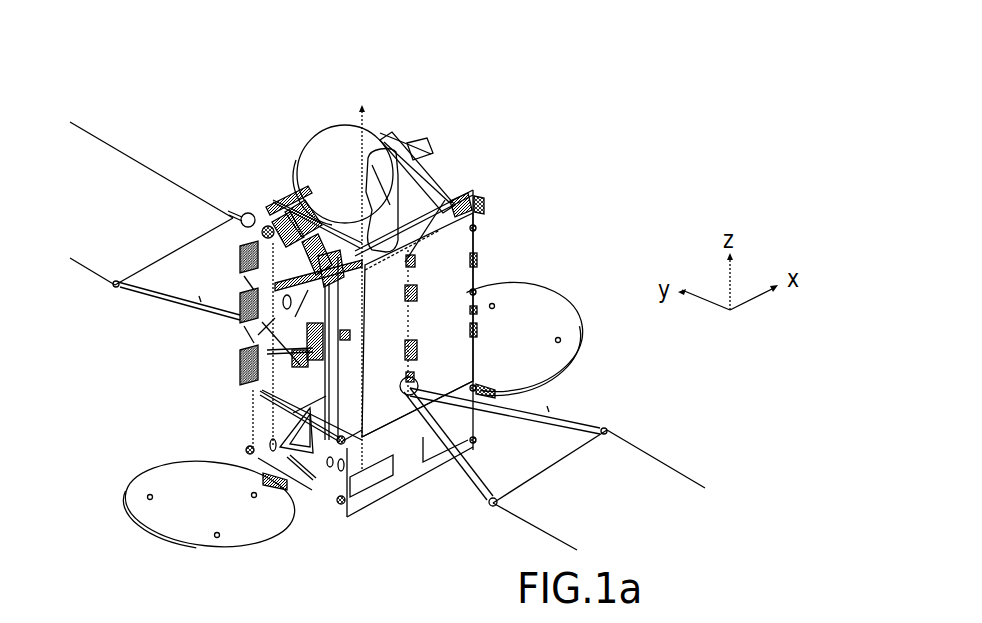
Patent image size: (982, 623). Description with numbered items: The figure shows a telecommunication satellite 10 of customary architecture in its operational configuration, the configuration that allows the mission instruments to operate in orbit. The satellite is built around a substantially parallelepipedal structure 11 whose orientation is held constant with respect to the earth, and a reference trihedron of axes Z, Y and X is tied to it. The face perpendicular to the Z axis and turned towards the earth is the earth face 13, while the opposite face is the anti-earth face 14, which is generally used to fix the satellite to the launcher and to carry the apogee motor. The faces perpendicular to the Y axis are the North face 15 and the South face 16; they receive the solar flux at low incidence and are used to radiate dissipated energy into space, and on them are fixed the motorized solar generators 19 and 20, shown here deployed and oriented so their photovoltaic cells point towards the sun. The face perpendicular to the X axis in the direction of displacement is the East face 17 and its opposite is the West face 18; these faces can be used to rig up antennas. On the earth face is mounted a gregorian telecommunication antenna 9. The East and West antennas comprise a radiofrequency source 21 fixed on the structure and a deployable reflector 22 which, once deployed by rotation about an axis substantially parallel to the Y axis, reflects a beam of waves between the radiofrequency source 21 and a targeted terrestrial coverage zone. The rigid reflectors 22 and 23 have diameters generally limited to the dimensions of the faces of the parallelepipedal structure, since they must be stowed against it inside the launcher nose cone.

The gregorian telecommunication antenna 9 is at (337, 145).
The satellite 10 is at (517, 160).
The substantially parallelepipedal structure 11 is at (477, 247).
The earth face 13 is at (402, 218).
The anti-earth face 14 is at (383, 492).
The North face 15 is at (453, 295).
The South face 16 is at (242, 317).
The East face 17 is at (473, 220).
The West face 18 is at (322, 487).
The solar generator 19 is at (627, 478).
The solar generator 20 is at (95, 190).
The radiofrequency source 21 is at (270, 213).
The deployable reflector 22 is at (188, 497).
The rigid reflector 23 is at (545, 355).